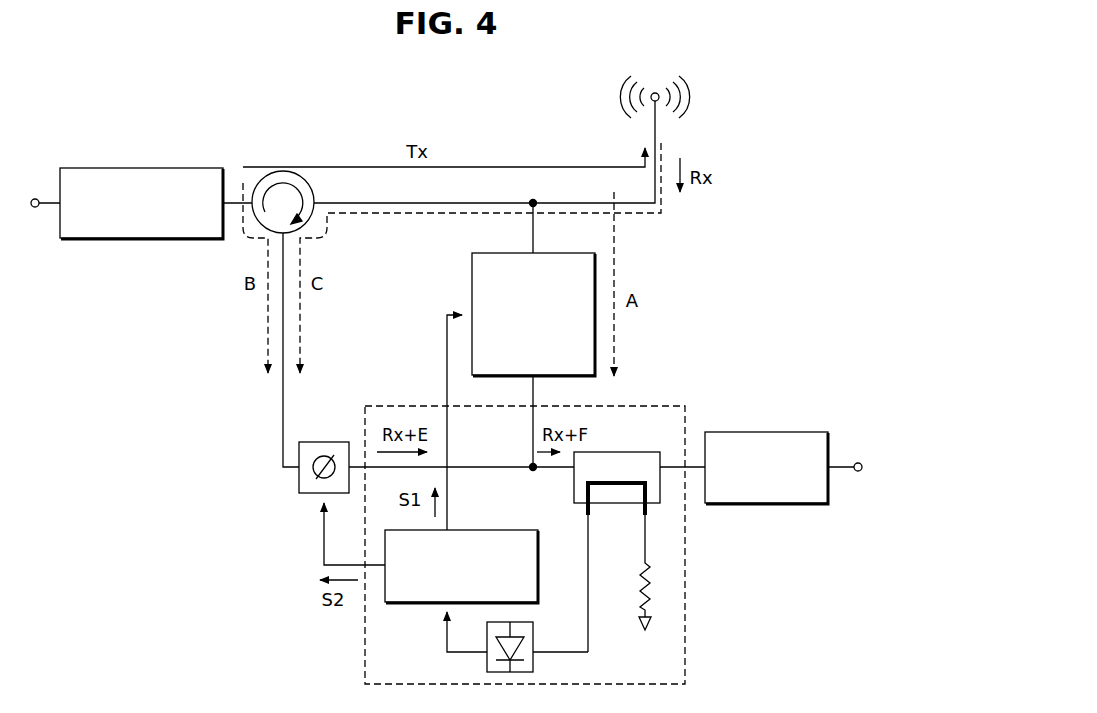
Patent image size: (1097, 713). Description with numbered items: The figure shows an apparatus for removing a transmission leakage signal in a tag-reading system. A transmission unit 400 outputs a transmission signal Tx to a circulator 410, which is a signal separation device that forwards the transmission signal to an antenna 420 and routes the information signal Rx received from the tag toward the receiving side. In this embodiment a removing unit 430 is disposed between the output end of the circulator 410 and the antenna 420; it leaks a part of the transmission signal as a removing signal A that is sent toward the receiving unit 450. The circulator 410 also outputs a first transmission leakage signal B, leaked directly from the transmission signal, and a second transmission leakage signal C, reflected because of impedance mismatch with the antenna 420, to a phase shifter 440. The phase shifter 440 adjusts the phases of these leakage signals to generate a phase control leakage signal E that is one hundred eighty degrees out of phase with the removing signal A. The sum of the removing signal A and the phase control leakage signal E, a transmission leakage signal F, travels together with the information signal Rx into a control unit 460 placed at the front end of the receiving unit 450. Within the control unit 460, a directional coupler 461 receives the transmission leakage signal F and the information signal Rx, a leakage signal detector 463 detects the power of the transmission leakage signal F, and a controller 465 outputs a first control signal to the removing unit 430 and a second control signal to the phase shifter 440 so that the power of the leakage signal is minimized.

The transmission unit 400 is at (145, 168).
The circulator 410 is at (283, 171).
The antenna 420 is at (687, 90).
The removing unit 430 is at (544, 253).
The phase shifter 440 is at (325, 442).
The receiving unit 450 is at (772, 432).
The control unit 460 is at (626, 406).
The directional coupler 461 is at (620, 452).
The leakage signal detector 463 is at (527, 622).
The controller 465 is at (473, 530).